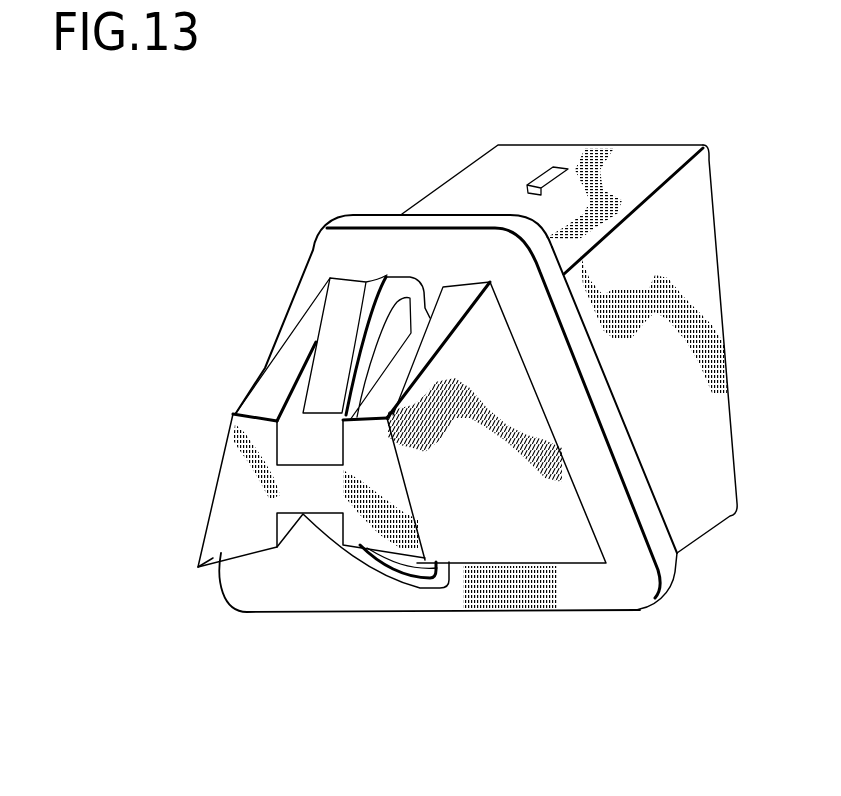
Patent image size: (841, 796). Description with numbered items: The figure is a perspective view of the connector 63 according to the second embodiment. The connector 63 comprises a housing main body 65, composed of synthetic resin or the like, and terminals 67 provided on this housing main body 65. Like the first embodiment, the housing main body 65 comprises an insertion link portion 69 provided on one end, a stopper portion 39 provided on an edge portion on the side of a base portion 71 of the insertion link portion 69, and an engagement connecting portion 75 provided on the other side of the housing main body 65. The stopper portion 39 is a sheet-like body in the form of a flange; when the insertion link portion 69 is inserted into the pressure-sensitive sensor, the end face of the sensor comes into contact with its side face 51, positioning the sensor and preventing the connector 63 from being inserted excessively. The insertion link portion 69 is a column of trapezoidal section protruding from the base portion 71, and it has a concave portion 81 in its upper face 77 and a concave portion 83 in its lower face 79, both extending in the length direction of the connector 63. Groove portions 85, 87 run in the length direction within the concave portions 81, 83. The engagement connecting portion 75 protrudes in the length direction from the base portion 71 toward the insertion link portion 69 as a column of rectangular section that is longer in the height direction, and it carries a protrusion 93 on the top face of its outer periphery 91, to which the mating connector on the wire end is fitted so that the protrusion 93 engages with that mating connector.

The connector 63 is at (258, 221).
The housing main body 65 is at (328, 203).
The stopper portion 39 is at (380, 216).
The engagement connecting portion 75 is at (650, 145).
The outer periphery 91 is at (500, 148).
The protrusion 93 is at (553, 166).
The base portion 71 is at (516, 366).
The side face 51 is at (568, 388).
The terminals 67 is at (355, 314).
The upper face 77 is at (275, 362).
The insertion link portion 69 is at (243, 447).
The groove portion 85 is at (310, 442).
The lower face 79 is at (210, 568).
The concave portion 83 is at (257, 553).
The groove portion 87 is at (302, 525).
The concave portion 81 is at (380, 396).